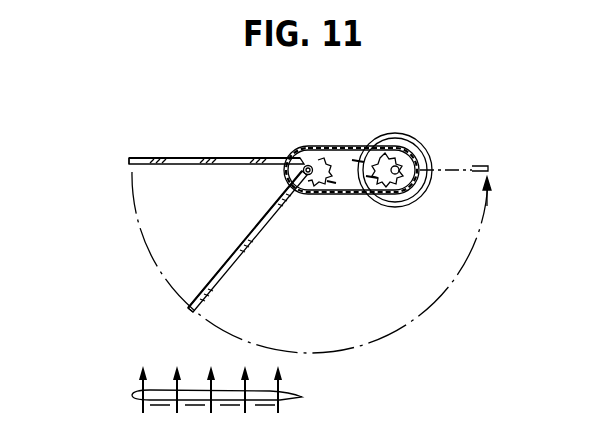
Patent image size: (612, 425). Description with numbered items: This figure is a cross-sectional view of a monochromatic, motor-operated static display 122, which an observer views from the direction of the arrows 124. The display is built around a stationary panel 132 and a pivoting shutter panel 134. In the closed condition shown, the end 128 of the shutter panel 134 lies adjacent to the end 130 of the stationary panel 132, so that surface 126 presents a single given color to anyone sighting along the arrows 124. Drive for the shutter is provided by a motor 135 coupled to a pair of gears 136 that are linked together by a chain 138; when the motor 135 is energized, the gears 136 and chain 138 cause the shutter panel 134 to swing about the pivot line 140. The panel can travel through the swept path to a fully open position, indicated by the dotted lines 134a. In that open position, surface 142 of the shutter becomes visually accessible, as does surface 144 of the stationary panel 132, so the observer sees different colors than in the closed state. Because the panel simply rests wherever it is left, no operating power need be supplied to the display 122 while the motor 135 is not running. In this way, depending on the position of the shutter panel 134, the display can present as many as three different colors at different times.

The static display 122 is at (290, 130).
The arrows 124 is at (302, 397).
The surface 126 is at (266, 231).
The end 128 is at (188, 310).
The end 130 is at (129, 161).
The stationary panel 132 is at (210, 157).
The shutter panel 134 is at (248, 254).
The dotted lines 134a is at (493, 158).
The motor 135 is at (427, 146).
The gears 136 is at (370, 150).
The chain 138 is at (352, 195).
The pivot line 140 is at (302, 172).
The surface 142 is at (215, 273).
The surface 144 is at (191, 166).